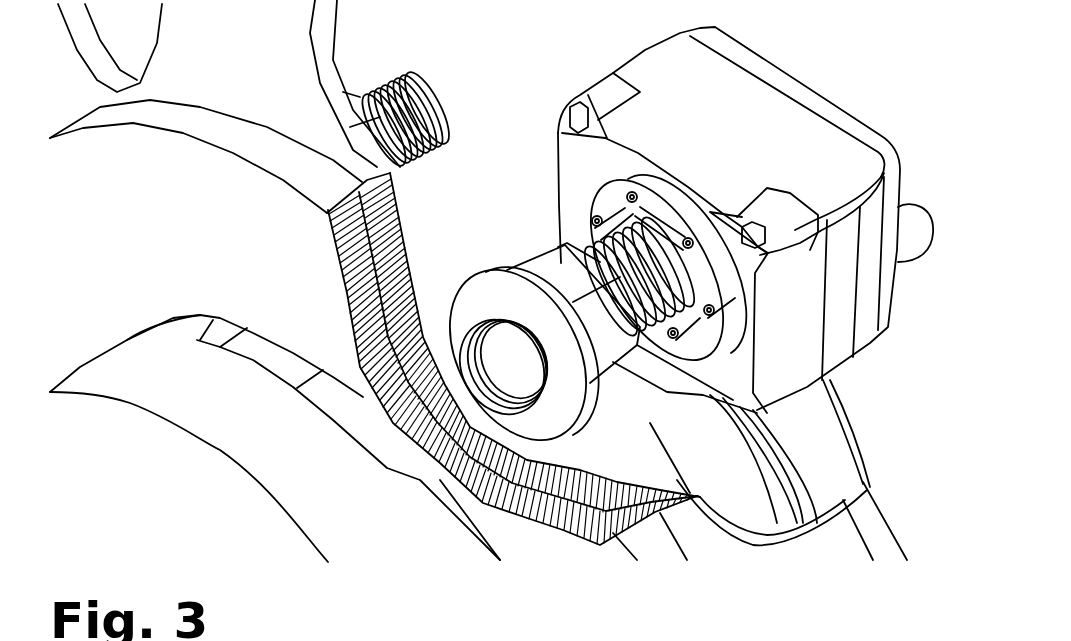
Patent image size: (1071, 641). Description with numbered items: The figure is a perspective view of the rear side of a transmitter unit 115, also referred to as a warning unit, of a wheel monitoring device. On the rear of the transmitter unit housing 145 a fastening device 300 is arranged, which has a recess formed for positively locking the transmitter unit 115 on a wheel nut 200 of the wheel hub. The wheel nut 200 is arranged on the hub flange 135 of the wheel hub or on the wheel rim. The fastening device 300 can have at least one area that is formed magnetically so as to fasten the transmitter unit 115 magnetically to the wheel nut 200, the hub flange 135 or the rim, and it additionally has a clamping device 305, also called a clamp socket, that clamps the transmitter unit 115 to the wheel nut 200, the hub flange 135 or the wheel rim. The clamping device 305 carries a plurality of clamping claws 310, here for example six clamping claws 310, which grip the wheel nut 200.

The transmitter unit 115 is at (843, 96).
The hub flange 135 is at (248, 140).
The transmitter unit housing 145 is at (670, 82).
The wheel nut 200 is at (612, 353).
The fastening device 300 is at (737, 310).
The clamping device 305 is at (663, 197).
The clamping claws 310 is at (610, 203).